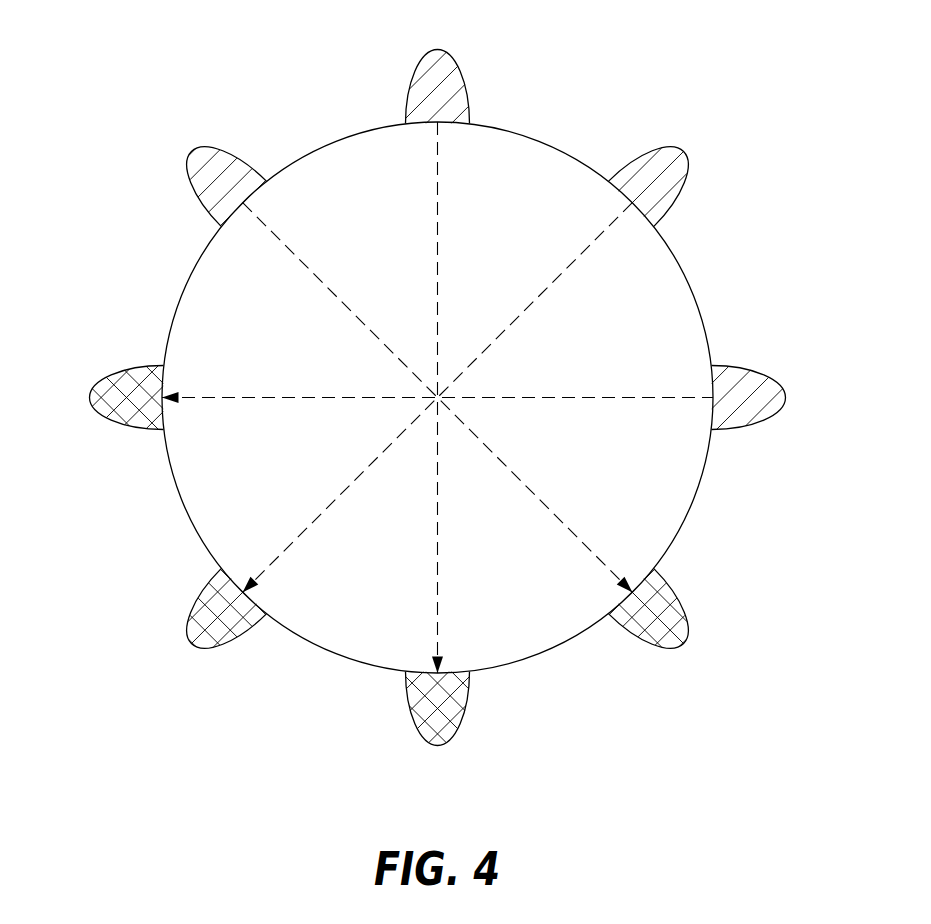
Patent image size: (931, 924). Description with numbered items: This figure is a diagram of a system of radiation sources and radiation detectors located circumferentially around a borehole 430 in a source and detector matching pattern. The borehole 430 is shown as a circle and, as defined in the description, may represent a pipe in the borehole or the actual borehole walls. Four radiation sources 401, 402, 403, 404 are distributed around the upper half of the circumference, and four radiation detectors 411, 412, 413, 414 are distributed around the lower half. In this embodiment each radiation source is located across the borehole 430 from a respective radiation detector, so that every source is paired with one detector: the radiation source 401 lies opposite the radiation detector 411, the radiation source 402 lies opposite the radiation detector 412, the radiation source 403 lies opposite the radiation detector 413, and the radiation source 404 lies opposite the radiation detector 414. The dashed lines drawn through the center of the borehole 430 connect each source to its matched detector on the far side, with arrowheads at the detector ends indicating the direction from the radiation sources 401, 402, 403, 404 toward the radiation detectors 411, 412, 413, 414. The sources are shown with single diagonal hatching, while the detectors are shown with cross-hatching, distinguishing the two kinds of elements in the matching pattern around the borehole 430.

The borehole 430 is at (541, 132).
The radiation source 401 is at (203, 150).
The radiation source 402 is at (441, 51).
The radiation source 403 is at (677, 150).
The radiation source 404 is at (785, 396).
The radiation detector 411 is at (687, 610).
The radiation detector 412 is at (433, 743).
The radiation detector 413 is at (190, 630).
The radiation detector 414 is at (91, 397).